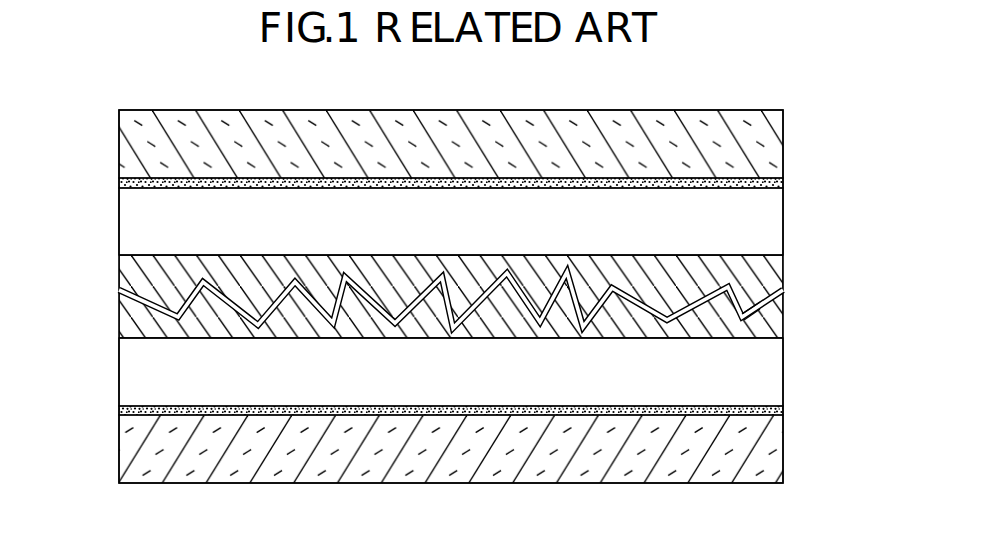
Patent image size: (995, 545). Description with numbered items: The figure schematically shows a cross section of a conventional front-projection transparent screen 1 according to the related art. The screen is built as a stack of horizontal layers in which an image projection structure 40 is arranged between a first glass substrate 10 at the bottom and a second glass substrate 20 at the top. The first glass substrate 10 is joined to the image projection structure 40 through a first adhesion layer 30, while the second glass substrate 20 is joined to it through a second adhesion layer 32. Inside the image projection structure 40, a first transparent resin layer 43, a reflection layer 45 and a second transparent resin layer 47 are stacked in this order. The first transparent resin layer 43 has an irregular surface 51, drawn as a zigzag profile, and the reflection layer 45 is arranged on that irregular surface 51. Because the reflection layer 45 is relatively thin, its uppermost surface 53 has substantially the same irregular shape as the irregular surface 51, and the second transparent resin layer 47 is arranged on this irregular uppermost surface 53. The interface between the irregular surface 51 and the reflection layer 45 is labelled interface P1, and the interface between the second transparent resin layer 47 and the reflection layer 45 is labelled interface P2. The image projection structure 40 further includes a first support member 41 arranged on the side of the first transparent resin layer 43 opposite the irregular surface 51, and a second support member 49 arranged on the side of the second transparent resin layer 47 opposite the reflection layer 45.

The transparent screen 1 is at (784, 99).
The first glass substrate 10 is at (776, 446).
The second glass substrate 20 is at (776, 141).
The first adhesion layer 30 is at (776, 410).
The second adhesion layer 32 is at (776, 182).
The image projection structure 40 is at (835, 192).
The first support member 41 is at (776, 368).
The first transparent resin layer 43 is at (777, 328).
The reflection layer 45 is at (785, 291).
The second transparent resin layer 47 is at (777, 262).
The second support member 49 is at (776, 211).
The irregular surface 51 is at (755, 316).
The uppermost surface 53 is at (749, 306).
The interface P1 is at (128, 294).
The interface P2 is at (128, 289).